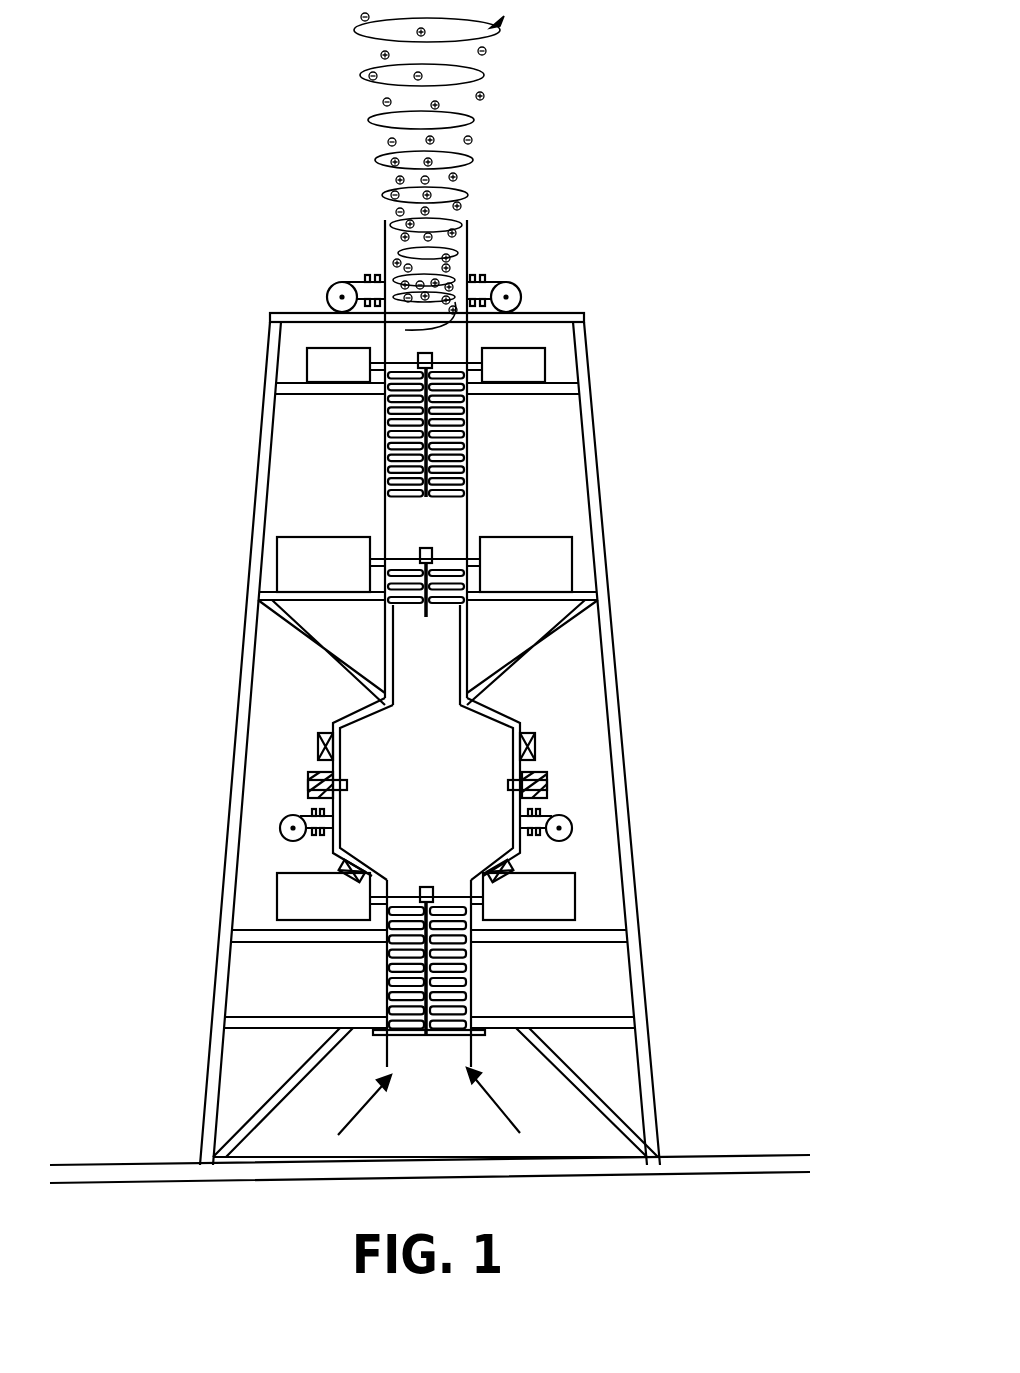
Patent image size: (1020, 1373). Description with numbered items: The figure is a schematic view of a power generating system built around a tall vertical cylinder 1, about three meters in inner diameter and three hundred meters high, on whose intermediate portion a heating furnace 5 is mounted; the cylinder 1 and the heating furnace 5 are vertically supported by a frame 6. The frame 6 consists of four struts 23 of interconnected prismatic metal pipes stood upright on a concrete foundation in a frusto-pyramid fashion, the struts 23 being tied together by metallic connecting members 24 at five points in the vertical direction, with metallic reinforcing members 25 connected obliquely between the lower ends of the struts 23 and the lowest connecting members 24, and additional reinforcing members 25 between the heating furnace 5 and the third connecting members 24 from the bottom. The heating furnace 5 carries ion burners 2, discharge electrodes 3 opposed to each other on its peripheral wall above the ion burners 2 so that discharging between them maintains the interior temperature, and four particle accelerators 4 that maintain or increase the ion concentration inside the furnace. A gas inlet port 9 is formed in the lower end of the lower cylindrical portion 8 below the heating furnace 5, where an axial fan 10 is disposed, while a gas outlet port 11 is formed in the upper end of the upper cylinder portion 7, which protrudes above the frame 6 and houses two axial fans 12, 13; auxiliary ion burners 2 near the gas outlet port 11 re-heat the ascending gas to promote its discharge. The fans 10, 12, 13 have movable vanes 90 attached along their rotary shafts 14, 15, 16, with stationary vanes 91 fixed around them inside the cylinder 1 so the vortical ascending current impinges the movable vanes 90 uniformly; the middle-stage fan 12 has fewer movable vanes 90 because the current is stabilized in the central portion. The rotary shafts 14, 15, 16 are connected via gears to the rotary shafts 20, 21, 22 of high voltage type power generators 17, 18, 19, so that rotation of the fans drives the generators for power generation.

The cylinder 1 is at (467, 500).
The ion burners 2 is at (327, 292).
The discharge electrodes 3 is at (308, 787).
The particle accelerators 4 is at (318, 743).
The heating furnace 5 is at (435, 802).
The frame 6 is at (622, 674).
The upper cylinder portion 7 is at (380, 500).
The lower cylindrical portion 8 is at (387, 980).
The gas inlet port 9 is at (462, 1057).
The axial fan 10 is at (480, 1102).
The gas outlet port 11 is at (458, 248).
The axial fan 12 is at (426, 655).
The axial fan 13 is at (430, 543).
The rotary shaft 14 is at (433, 1037).
The rotary shaft 15 is at (433, 597).
The rotary shaft 16 is at (393, 525).
The power generator 17 is at (333, 911).
The power generator 18 is at (333, 573).
The power generator 19 is at (349, 379).
The rotary shaft 20 is at (400, 897).
The rotary shaft 21 is at (398, 561).
The rotary shaft 22 is at (404, 363).
The struts 23 is at (226, 850).
The metallic connecting members 24 is at (572, 382).
The metallic reinforcing members 25 is at (345, 653).
The movable vanes 90 is at (412, 492).
The stationary vanes 91 is at (468, 437).